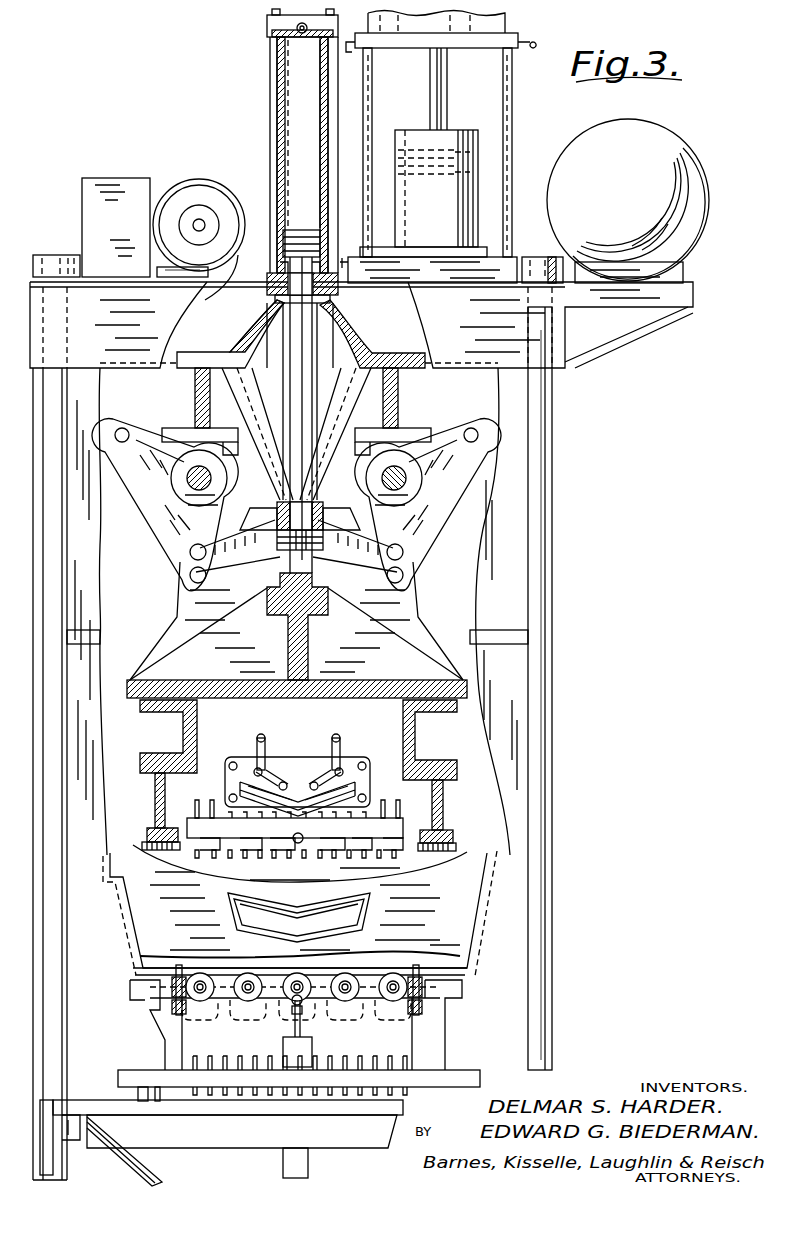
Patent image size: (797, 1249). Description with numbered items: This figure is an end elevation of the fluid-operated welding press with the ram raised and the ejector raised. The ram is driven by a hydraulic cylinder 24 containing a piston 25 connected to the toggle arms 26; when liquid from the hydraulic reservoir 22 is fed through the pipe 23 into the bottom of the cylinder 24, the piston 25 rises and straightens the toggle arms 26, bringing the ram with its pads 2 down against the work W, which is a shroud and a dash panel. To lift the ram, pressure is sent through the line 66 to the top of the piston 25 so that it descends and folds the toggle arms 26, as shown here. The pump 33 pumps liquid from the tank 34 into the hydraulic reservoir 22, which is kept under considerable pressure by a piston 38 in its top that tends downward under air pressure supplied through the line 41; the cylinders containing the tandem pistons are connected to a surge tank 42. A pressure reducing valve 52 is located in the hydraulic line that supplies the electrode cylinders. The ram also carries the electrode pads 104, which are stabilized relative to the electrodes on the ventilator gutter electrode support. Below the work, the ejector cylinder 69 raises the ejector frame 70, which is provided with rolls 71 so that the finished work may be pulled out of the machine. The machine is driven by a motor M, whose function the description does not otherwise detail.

The pads 2 is at (330, 840).
The hydraulic reservoir 22 is at (481, 182).
The pipe 23 is at (278, 272).
The cylinder 24 is at (278, 80).
The piston 25 is at (328, 234).
The toggle arms 26 is at (190, 536).
The pump 33 is at (202, 196).
The tank 34 is at (86, 230).
The piston 38 is at (490, 148).
The line 41 is at (370, 55).
The surge tank 42 is at (600, 130).
The pressure reducing valve 52 is at (357, 765).
The line 66 is at (272, 36).
The ejector cylinder 69 is at (312, 1049).
The ejector frame 70 is at (380, 974).
The rolls 71 is at (240, 972).
The electrode pads 104 is at (282, 770).
The motor M is at (243, 222).
The work W is at (128, 934).